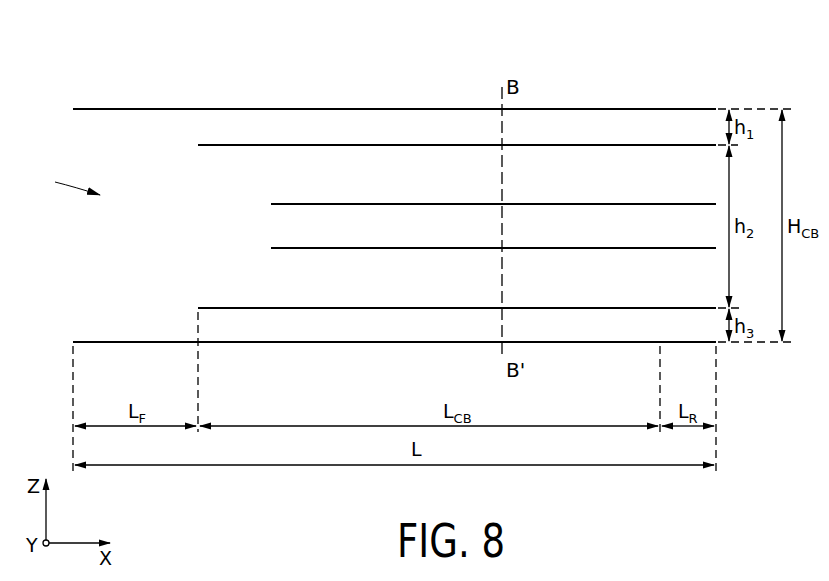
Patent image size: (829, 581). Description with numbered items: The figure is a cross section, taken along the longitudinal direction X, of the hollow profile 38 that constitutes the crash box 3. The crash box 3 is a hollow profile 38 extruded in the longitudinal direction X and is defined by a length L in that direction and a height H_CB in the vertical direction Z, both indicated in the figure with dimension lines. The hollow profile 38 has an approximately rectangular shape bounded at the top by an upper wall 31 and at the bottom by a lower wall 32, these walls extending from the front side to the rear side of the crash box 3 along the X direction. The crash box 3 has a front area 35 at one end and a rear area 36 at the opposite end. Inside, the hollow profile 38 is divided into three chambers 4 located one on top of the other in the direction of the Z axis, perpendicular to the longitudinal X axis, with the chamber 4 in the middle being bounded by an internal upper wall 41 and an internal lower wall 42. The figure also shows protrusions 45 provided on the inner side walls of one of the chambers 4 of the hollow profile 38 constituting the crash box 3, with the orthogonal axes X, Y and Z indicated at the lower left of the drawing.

The crash box 3 is at (600, 107).
The chambers 4 is at (266, 166).
The upper wall 31 is at (313, 107).
The lower wall 32 is at (340, 344).
The front area 35 is at (135, 107).
The rear area 36 is at (663, 100).
The hollow profile 38 is at (56, 182).
The internal upper wall 41 is at (366, 144).
The internal lower wall 42 is at (413, 310).
The protrusions 45 is at (547, 207).